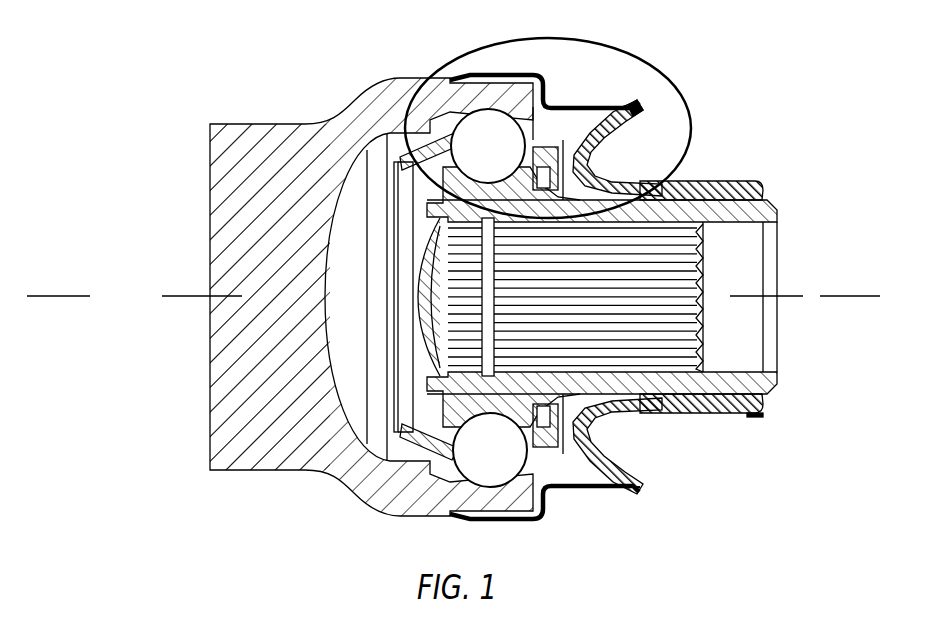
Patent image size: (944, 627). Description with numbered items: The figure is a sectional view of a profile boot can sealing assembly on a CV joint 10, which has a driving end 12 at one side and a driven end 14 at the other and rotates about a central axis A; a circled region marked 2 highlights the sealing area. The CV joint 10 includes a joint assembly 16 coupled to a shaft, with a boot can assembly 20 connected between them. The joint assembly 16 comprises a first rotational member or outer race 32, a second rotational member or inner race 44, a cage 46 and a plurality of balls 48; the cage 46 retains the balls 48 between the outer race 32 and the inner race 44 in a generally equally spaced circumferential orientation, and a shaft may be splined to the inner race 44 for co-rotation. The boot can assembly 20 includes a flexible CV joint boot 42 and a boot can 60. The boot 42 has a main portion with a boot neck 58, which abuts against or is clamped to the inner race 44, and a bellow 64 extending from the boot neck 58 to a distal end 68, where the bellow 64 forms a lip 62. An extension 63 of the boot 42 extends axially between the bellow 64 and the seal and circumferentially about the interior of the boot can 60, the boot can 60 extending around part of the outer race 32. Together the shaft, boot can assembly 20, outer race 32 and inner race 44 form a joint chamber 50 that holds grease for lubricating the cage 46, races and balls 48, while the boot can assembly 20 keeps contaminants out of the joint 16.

The detail region 2 is at (547, 38).
The CV joint 10 is at (795, 136).
The driving end 12 is at (801, 256).
The driven end 14 is at (162, 272).
The joint assembly 16 is at (442, 478).
The boot can assembly 20 is at (603, 512).
The first rotational member or outer race 32 is at (436, 100).
The CV joint boot 42 is at (610, 462).
The second rotational member or inner race 44 is at (690, 200).
The cage 46 is at (420, 440).
The balls 48 is at (498, 157).
The joint chamber 50 is at (553, 470).
The boot neck 58 is at (712, 413).
The boot can 60 is at (576, 110).
The lip 62 is at (627, 115).
The extension 63 is at (550, 128).
The bellow 64 is at (600, 148).
The distal end 68 is at (640, 112).
The central axis A is at (822, 297).